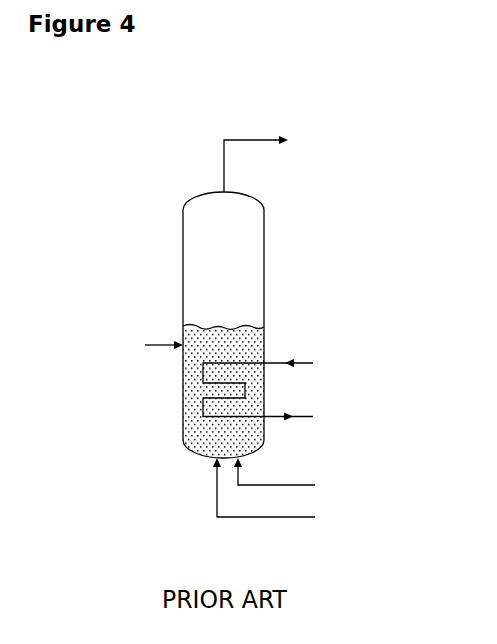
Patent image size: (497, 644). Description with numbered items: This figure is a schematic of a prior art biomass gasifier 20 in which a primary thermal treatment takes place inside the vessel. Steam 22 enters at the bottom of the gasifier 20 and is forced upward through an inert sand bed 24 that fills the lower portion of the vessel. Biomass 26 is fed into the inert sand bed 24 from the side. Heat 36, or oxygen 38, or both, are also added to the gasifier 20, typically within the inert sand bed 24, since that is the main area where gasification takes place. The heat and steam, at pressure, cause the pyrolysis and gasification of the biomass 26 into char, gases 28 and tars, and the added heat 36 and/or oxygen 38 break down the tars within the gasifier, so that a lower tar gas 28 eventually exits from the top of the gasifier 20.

The biomass gasifier 20 is at (183, 244).
The steam 22 is at (283, 493).
The inert sand bed 24 is at (212, 441).
The biomass 26 is at (164, 331).
The gases 28 is at (275, 160).
The heat 36 is at (278, 387).
The oxygen 38 is at (293, 477).